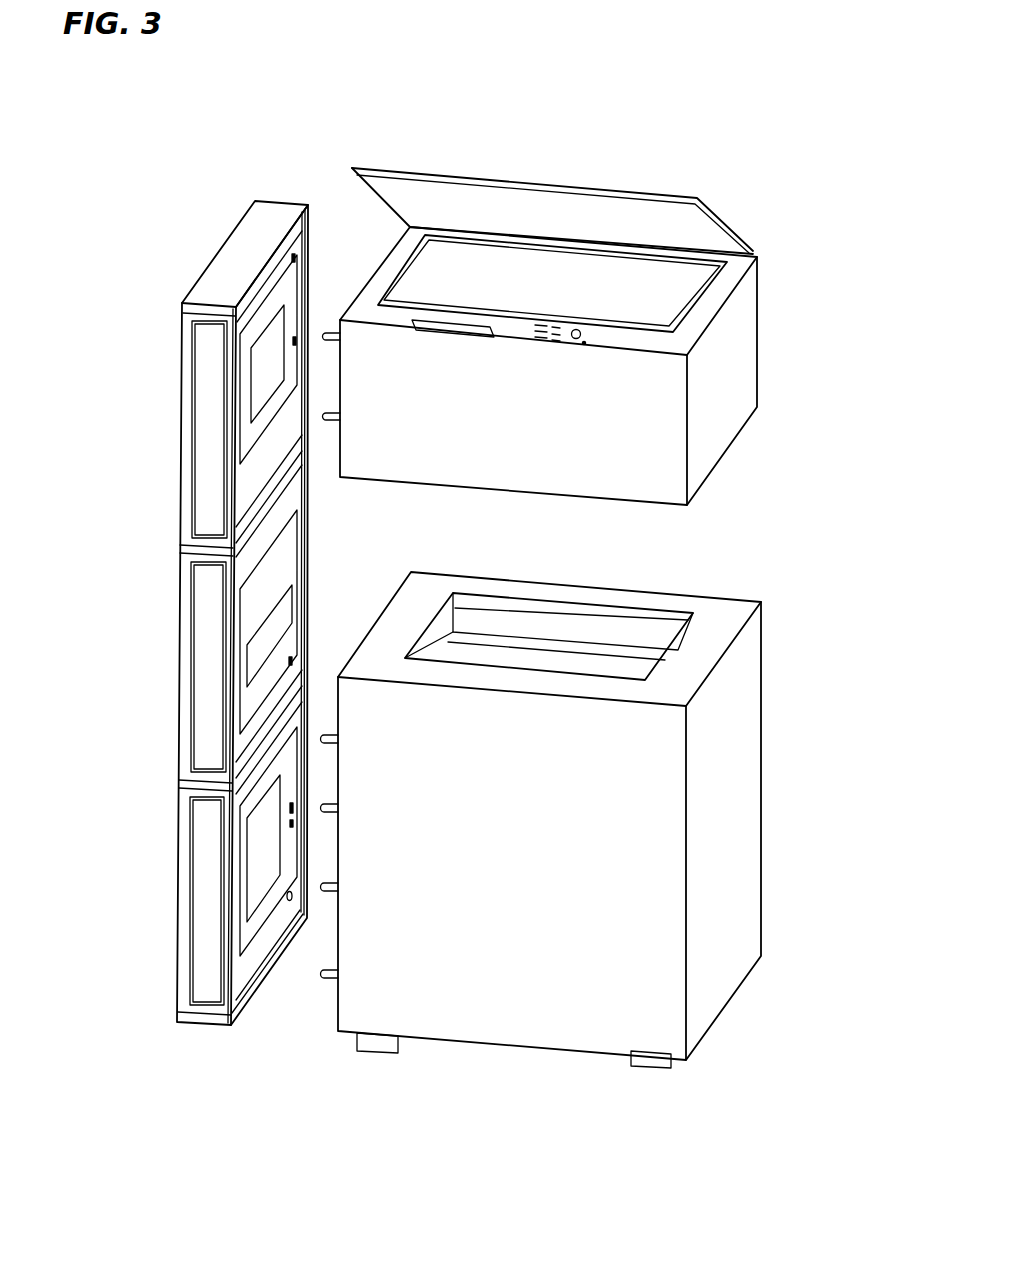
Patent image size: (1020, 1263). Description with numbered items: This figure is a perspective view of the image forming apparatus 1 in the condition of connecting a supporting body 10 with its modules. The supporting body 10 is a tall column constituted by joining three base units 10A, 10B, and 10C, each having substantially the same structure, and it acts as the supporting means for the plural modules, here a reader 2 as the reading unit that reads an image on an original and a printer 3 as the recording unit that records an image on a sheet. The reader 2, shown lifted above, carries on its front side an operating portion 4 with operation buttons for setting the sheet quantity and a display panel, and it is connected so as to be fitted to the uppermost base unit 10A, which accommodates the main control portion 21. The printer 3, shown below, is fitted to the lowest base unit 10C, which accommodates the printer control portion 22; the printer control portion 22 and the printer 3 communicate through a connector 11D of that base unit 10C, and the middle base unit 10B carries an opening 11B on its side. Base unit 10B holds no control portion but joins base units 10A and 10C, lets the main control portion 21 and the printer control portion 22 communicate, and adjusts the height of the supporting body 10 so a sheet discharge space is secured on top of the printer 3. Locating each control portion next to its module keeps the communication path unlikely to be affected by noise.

The image forming apparatus 1 is at (708, 188).
The reader 2 is at (738, 313).
The printer 3 is at (718, 846).
The operating portion 4 is at (568, 338).
The supporting body 10 is at (213, 247).
The base unit 10A is at (172, 497).
The base unit 10B is at (171, 675).
The base unit 10C is at (171, 976).
The middle door opening 11B is at (270, 633).
The connector 11D is at (330, 298).
The main control portion 21 is at (267, 377).
The printer control portion 22 is at (260, 877).